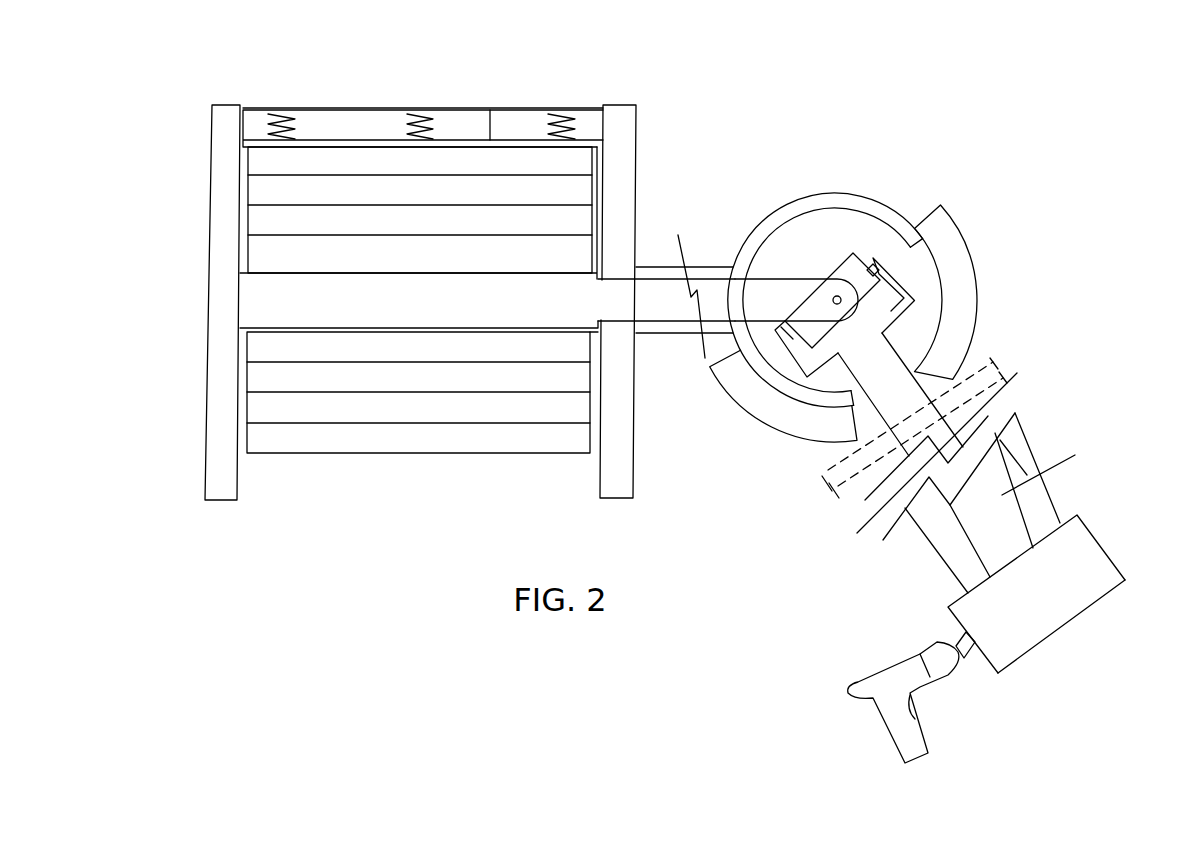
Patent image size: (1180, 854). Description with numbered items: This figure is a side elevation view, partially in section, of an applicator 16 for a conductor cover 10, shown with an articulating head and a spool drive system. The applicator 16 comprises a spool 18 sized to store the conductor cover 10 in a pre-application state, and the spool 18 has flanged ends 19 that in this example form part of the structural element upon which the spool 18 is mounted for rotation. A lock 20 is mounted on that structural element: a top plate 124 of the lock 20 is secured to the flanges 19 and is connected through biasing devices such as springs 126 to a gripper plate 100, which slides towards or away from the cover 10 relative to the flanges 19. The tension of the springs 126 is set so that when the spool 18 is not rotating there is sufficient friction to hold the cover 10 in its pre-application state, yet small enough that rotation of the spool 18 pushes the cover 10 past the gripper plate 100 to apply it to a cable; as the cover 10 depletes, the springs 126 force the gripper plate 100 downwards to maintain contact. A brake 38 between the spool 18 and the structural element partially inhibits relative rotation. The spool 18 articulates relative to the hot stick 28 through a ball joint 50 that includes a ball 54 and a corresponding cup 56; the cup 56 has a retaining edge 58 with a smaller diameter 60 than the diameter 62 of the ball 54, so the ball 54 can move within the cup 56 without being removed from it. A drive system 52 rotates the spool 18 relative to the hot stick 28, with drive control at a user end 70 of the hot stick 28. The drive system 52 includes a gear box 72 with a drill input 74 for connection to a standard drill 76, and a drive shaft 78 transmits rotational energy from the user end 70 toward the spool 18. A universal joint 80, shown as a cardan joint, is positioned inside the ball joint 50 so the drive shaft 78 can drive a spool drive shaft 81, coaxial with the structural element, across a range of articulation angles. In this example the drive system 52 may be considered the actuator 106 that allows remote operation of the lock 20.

The conductor cover 10 is at (500, 438).
The applicator 16 is at (722, 112).
The spool 18 is at (402, 318).
The flanged ends 19 is at (210, 243).
The lock 20 is at (456, 139).
The hot stick 28 is at (974, 463).
The brake 38 is at (1058, 603).
The ball joint 50 is at (825, 278).
The ball 54 is at (818, 194).
The drive system 52 is at (918, 687).
The cup 56 is at (957, 228).
The retaining edge 58 is at (905, 222).
The diameter 60 is at (866, 476).
The diameter 62 is at (848, 464).
The user end 70 is at (1052, 487).
The gear box 72 is at (1030, 654).
The drill input 74 is at (956, 638).
The drill 76 is at (862, 688).
The drive shaft 78 is at (1026, 462).
The universal joint 80 is at (812, 262).
The spool drive shaft 81 is at (622, 322).
The gripper plate 100 is at (490, 108).
The actuator 106 is at (1083, 635).
The top plate 124 is at (528, 106).
The springs 126 is at (287, 112).